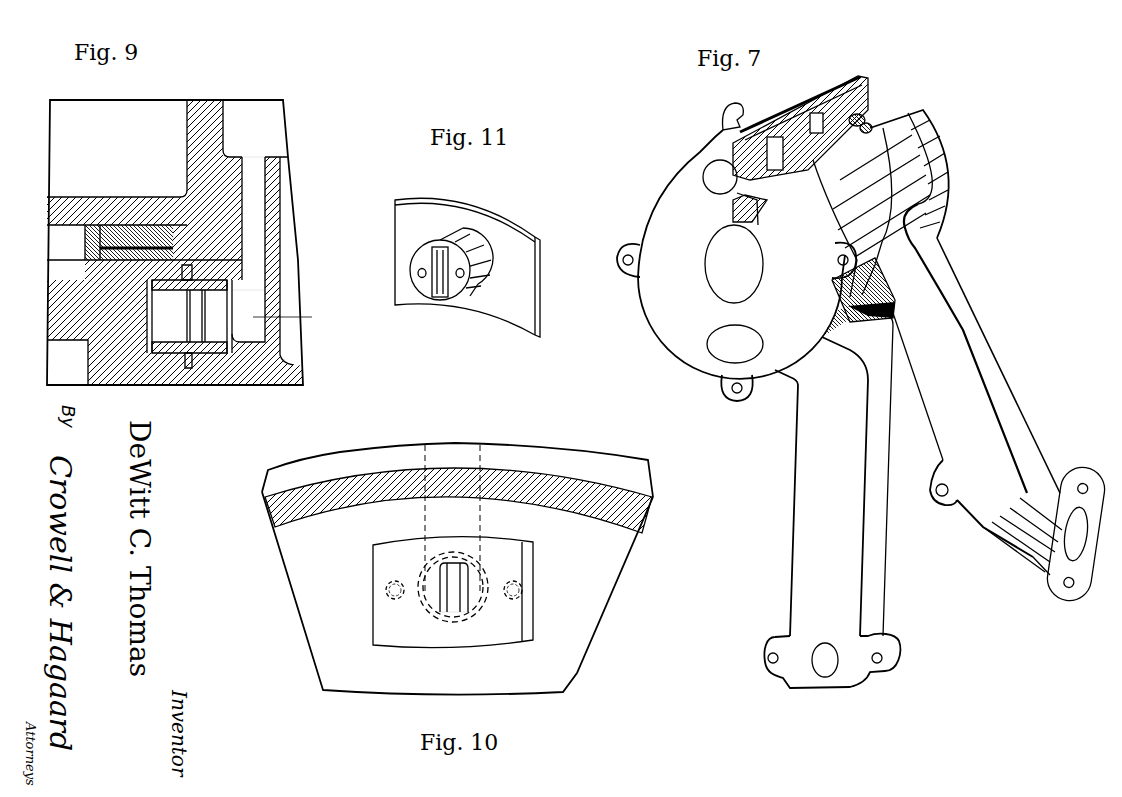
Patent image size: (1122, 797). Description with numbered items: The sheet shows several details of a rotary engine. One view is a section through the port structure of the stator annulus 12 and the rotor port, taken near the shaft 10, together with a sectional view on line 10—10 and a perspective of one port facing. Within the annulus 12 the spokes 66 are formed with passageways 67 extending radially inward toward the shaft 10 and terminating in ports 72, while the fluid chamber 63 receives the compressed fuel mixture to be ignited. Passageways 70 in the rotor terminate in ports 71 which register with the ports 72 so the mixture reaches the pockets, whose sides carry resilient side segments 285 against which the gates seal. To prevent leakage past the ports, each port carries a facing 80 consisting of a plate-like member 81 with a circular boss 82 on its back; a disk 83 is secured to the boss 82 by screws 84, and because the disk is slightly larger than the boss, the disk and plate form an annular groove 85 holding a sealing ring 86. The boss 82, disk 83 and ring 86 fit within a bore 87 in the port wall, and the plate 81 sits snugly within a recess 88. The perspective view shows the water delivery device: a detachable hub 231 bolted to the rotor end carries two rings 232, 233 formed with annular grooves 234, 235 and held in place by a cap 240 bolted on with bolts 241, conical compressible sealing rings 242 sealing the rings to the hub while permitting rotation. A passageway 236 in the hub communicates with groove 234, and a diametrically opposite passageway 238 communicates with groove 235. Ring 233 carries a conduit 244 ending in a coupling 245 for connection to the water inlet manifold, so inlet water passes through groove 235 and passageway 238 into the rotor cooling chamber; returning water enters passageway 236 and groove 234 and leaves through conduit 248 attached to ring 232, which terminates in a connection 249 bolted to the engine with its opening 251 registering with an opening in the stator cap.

In FIG. 9, the shaft 10 is at (185, 85).
In FIG. 9, the annulus 12 is at (312, 317).
In FIG. 9, the fluid chamber 63 is at (267, 128).
In FIG. 9, the spokes 66 is at (272, 201).
In FIG. 9, the passageways 67 is at (253, 302).
In FIG. 10, the passageways 67 is at (482, 458).
In FIG. 9, the passageways 70 is at (133, 298).
In FIG. 9, the ports 71 is at (170, 327).
In FIG. 9, the ports 72 is at (212, 350).
In FIG. 11, the ports 72 is at (440, 272).
In FIG. 10, the ports 72 is at (455, 603).
In FIG. 9, the port facings 80 is at (177, 363).
In FIG. 11, the port facings 80 is at (540, 238).
In FIG. 10, the port facings 80 is at (380, 641).
In FIG. 9, the plate-like member 81 is at (160, 250).
In FIG. 11, the plate-like member 81 is at (410, 213).
In FIG. 10, the plate-like member 81 is at (392, 558).
In FIG. 9, the circular boss 82 is at (217, 295).
In FIG. 10, the circular boss 82 is at (436, 617).
In FIG. 11, the disk 83 is at (424, 293).
In FIG. 11, the screws 84 is at (418, 272).
In FIG. 9, the annular groove 85 is at (147, 262).
In FIG. 11, the annular groove 85 is at (470, 240).
In FIG. 9, the sealing ring 86 is at (153, 262).
In FIG. 11, the sealing ring 86 is at (480, 250).
In FIG. 10, the sealing ring 86 is at (487, 565).
In FIG. 9, the bore 87 is at (170, 335).
In FIG. 9, the recess 88 is at (197, 252).
In FIG. 10, the recess 88 is at (373, 584).
In FIG. 9, the resilient side segments 285 is at (86, 260).
In FIG. 7, the detachable hub 231 is at (807, 172).
In FIG. 7, the ring 232 is at (860, 212).
In FIG. 7, the ring 233 is at (900, 162).
In FIG. 7, the annular groove 234 is at (713, 105).
In FIG. 7, the annular groove 235 is at (815, 95).
In FIG. 7, the passageway 236 is at (718, 176).
In FIG. 7, the passageway 238 is at (712, 360).
In FIG. 7, the cap 240 is at (860, 80).
In FIG. 7, the bolts 241 is at (868, 112).
In FIG. 7, the sealing rings 242 is at (785, 137).
In FIG. 7, the conduit 244 is at (990, 360).
In FIG. 7, the coupling 245 is at (1067, 478).
In FIG. 7, the conduit 248 is at (815, 508).
In FIG. 7, the connection 249 is at (866, 678).
In FIG. 7, the opening 251 is at (820, 668).